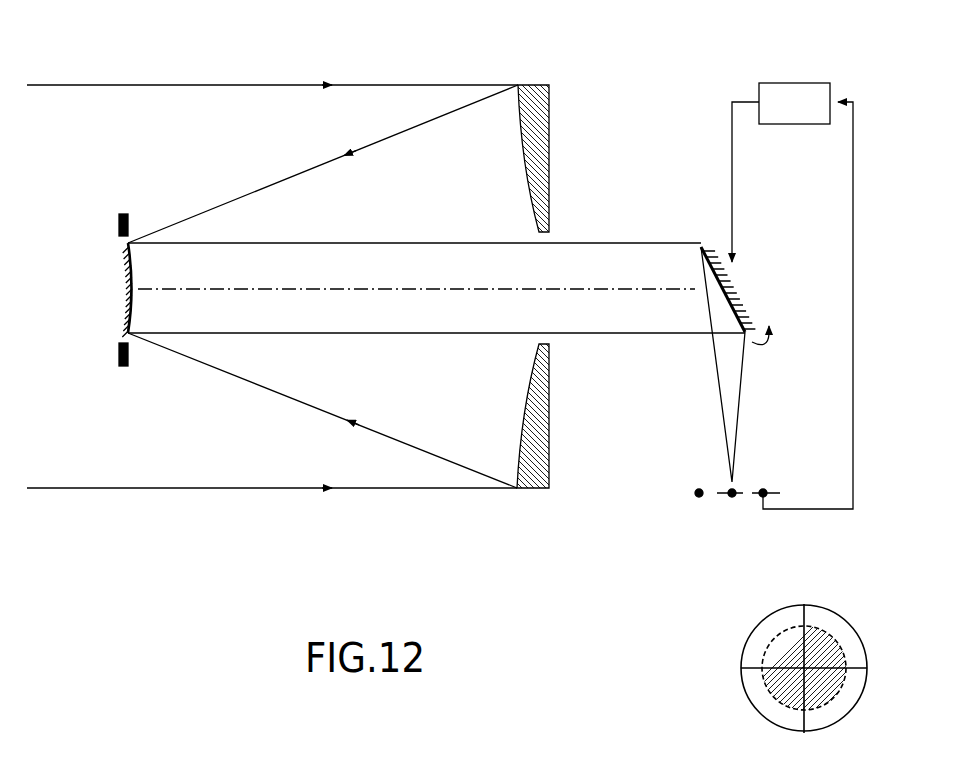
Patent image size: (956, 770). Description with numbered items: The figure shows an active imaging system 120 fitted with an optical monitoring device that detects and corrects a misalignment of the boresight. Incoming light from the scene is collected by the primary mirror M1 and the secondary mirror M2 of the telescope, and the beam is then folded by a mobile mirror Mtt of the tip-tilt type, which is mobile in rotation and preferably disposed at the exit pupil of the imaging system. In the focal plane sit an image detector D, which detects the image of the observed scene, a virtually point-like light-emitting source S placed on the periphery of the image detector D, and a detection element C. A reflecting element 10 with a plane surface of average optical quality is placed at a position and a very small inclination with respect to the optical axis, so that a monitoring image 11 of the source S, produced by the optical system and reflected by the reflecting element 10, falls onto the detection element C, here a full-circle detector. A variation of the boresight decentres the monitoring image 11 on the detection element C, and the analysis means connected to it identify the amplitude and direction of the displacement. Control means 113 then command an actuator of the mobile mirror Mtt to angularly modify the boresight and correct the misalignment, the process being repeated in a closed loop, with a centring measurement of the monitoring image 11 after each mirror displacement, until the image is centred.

The imaging system 120 is at (184, 72).
The reflecting element 10 is at (126, 213).
The primary mirror M1 is at (551, 143).
The secondary mirror M2 is at (125, 312).
The mobile mirror Mtt is at (740, 305).
The control means 113 is at (777, 83).
The light-emitting source S is at (701, 497).
The image detector D is at (734, 497).
The detection element C is at (766, 497).
The monitoring image 11 is at (777, 653).